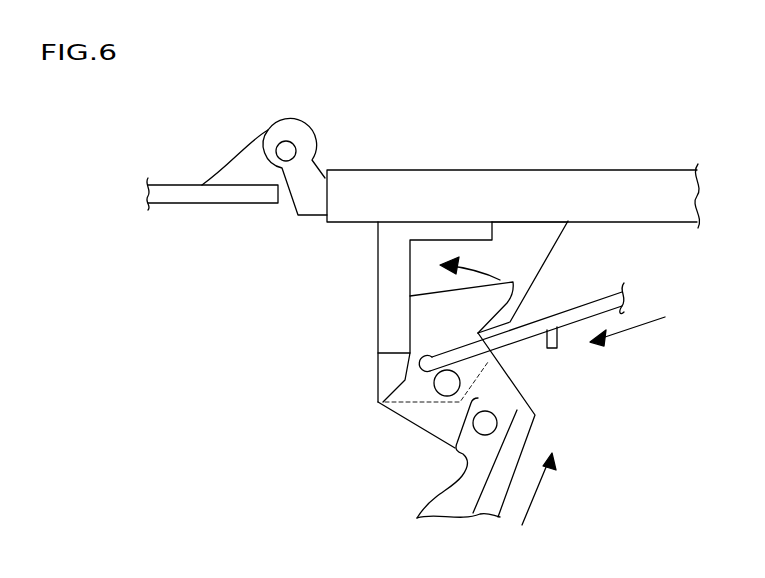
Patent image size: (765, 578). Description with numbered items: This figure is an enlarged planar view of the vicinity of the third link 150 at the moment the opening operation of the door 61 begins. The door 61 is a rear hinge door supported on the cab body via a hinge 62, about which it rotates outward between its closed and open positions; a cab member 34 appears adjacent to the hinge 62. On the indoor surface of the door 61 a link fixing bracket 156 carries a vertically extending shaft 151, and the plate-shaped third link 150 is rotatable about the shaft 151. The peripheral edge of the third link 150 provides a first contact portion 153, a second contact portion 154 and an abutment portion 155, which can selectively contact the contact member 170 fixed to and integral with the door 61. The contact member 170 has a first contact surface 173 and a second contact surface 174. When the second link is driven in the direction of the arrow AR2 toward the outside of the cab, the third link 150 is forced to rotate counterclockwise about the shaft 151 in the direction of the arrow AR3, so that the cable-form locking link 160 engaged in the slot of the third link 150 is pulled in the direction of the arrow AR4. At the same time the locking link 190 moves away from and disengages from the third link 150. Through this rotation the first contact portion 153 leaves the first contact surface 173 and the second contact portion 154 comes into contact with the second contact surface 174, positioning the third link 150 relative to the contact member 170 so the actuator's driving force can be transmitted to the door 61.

The cover plate 34 is at (178, 196).
The hinge 62 is at (287, 135).
The door 61 is at (623, 192).
The link fixing bracket 156 is at (512, 233).
The second contact surface 174 is at (411, 280).
The second contact portion 154 is at (408, 313).
The abutment portion 155 is at (513, 303).
The contact member 170 is at (390, 336).
The first contact surface 173 is at (393, 358).
The first contact portion 153 is at (380, 399).
The shaft 151 is at (440, 387).
The third link 150 is at (435, 422).
The locking link 160 is at (575, 310).
The locking link 190 is at (551, 350).
The arrow AR3 is at (477, 246).
The arrow AR4 is at (633, 327).
The arrow AR2 is at (537, 499).